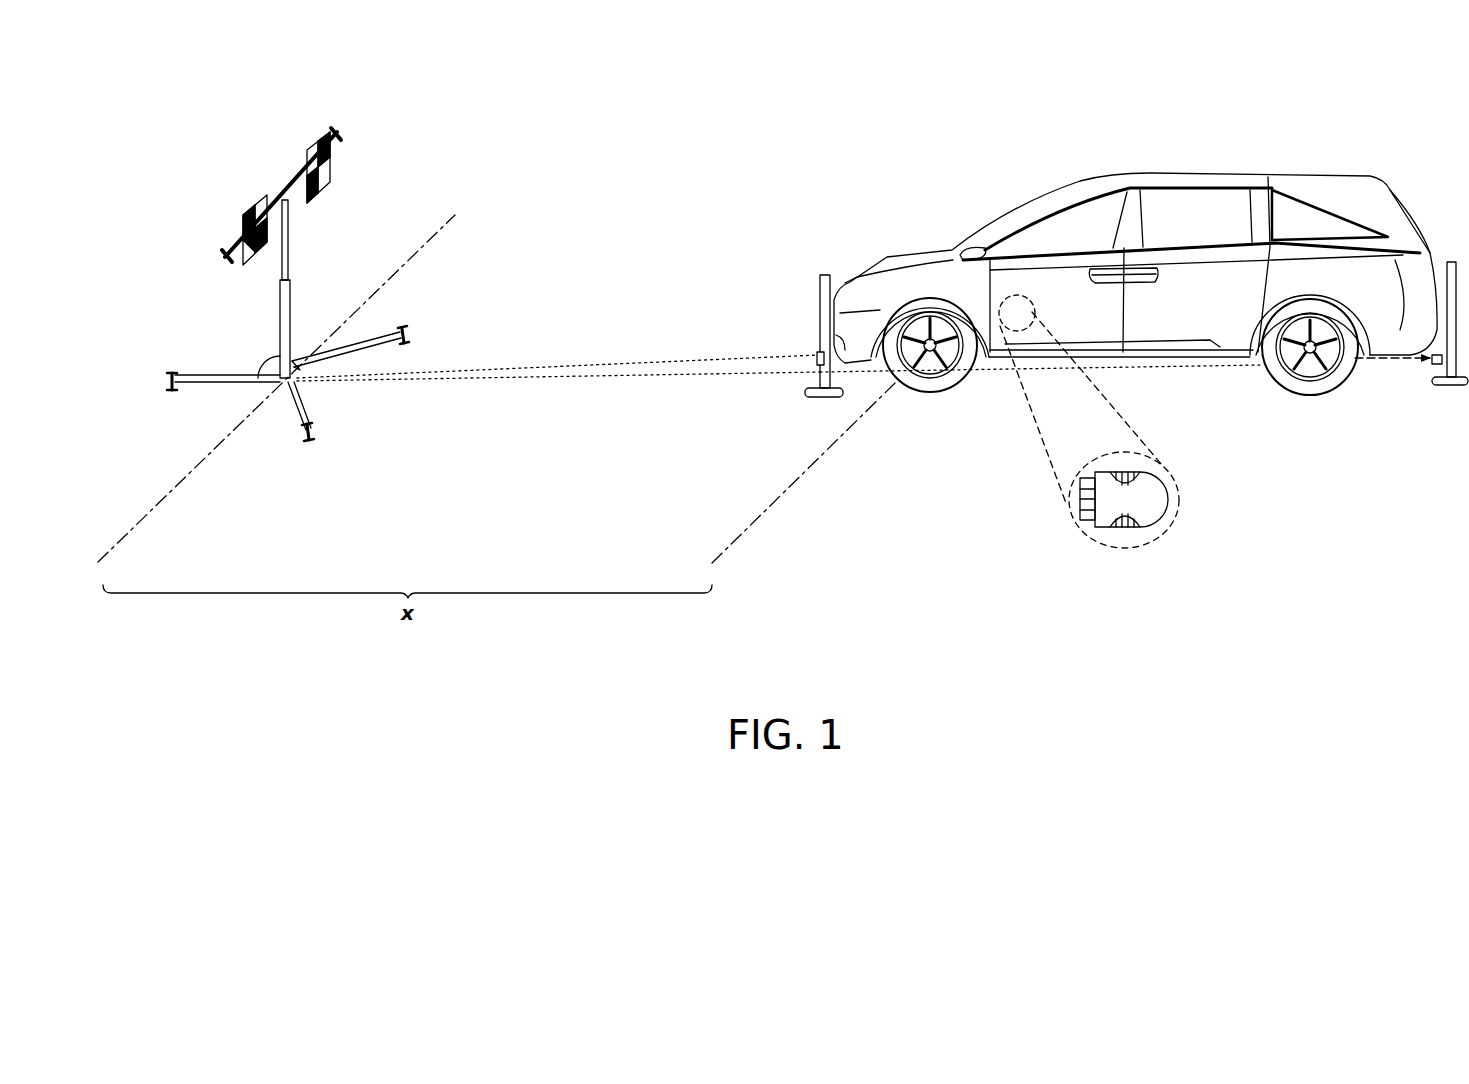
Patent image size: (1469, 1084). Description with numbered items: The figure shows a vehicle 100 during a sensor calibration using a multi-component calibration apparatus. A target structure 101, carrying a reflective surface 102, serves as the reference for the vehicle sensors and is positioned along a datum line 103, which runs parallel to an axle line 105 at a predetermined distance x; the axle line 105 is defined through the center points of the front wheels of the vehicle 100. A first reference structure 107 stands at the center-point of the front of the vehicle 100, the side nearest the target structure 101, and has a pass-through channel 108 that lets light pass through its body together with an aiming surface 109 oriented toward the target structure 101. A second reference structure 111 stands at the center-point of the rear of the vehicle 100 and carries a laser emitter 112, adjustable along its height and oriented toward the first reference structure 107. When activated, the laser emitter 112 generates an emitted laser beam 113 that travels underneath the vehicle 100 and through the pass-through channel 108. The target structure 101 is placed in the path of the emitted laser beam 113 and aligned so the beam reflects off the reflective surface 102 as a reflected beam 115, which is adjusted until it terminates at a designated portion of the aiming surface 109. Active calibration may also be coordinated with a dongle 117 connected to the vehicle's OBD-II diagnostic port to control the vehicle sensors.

The vehicle 100 is at (1280, 176).
The target structure 101 is at (283, 196).
The reflective surface 102 is at (298, 375).
The datum line 103 is at (170, 492).
The axle line 105 is at (736, 531).
The first reference structure 107 is at (823, 274).
The pass-through channel 108 is at (805, 377).
The aiming surface 109 is at (816, 354).
The second reference structure 111 is at (1452, 261).
The laser emitter 112 is at (1434, 364).
The emitted laser beam 113 is at (1245, 367).
The reflected beam 115 is at (700, 356).
The dongle 117 is at (1162, 488).